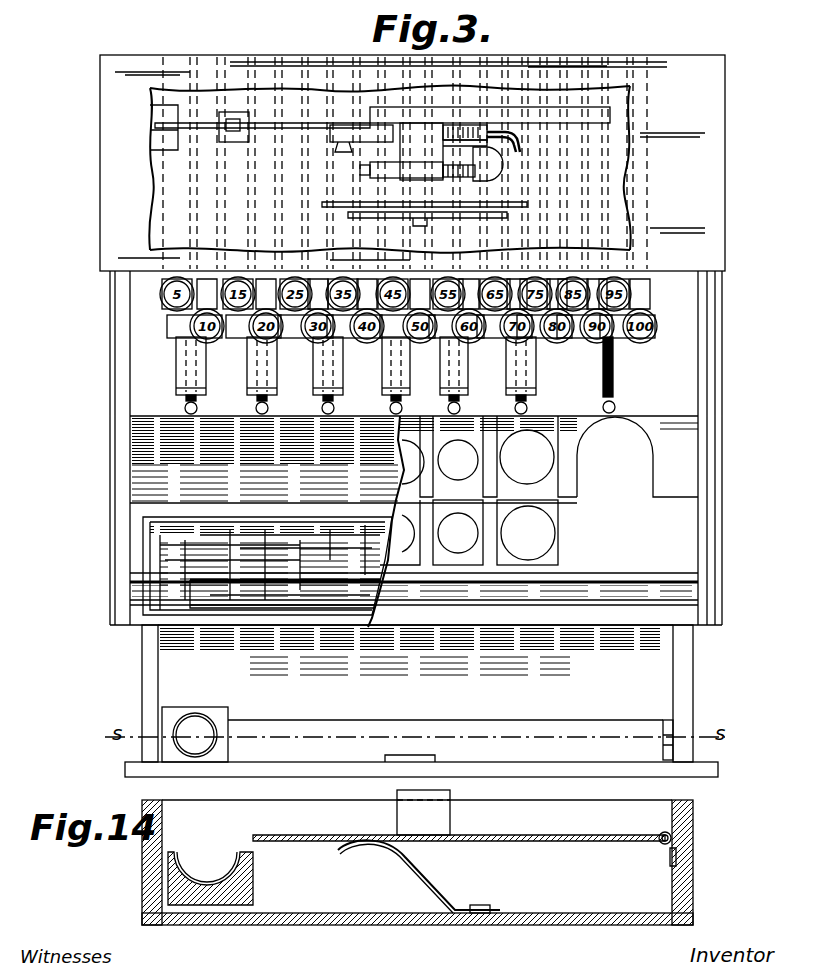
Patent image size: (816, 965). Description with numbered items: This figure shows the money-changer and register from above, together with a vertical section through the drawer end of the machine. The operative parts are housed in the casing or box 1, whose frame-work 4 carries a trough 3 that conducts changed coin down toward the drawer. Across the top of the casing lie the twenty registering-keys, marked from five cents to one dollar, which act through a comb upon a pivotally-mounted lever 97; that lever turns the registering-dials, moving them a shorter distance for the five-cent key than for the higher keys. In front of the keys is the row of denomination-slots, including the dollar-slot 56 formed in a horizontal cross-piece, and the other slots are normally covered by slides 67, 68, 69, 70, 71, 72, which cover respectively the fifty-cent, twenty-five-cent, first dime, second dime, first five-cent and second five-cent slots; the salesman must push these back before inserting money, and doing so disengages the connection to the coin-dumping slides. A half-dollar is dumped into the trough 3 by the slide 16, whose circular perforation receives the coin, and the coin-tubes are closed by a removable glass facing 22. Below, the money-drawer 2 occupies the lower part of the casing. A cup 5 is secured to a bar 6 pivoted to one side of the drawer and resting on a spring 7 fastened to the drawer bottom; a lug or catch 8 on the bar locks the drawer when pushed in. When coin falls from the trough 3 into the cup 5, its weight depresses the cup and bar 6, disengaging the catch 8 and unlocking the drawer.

In FIG. 3, the pivotally-mounted lever 97 is at (382, 166).
In FIG. 3, the casing or box 1 is at (719, 397).
In FIG. 3, the slide 72 is at (191, 375).
In FIG. 3, the slide 71 is at (262, 375).
In FIG. 3, the slide 70 is at (328, 375).
In FIG. 3, the slide 69 is at (396, 375).
In FIG. 3, the slide 68 is at (454, 375).
In FIG. 3, the slide 67 is at (521, 375).
In FIG. 3, the dollar-slot 56 is at (614, 370).
In FIG. 3, the trough 3 is at (414, 510).
In FIG. 3, the slide 16 is at (497, 548).
In FIG. 3, the removable glass facing 22 is at (267, 566).
In FIG. 3, the money-drawer 2 is at (142, 666).
In FIG. 3, the frame-work 4 is at (693, 640).
In FIG. 3, the bar 6 is at (415, 692).
In FIG. 14, the bar 6 is at (462, 827).
In FIG. 3, the cup 5 is at (207, 700).
In FIG. 14, the cup 5 is at (207, 860).
In FIG. 3, the lug or catch 8 is at (410, 748).
In FIG. 14, the lug or catch 8 is at (397, 810).
In FIG. 14, the spring 7 is at (405, 862).